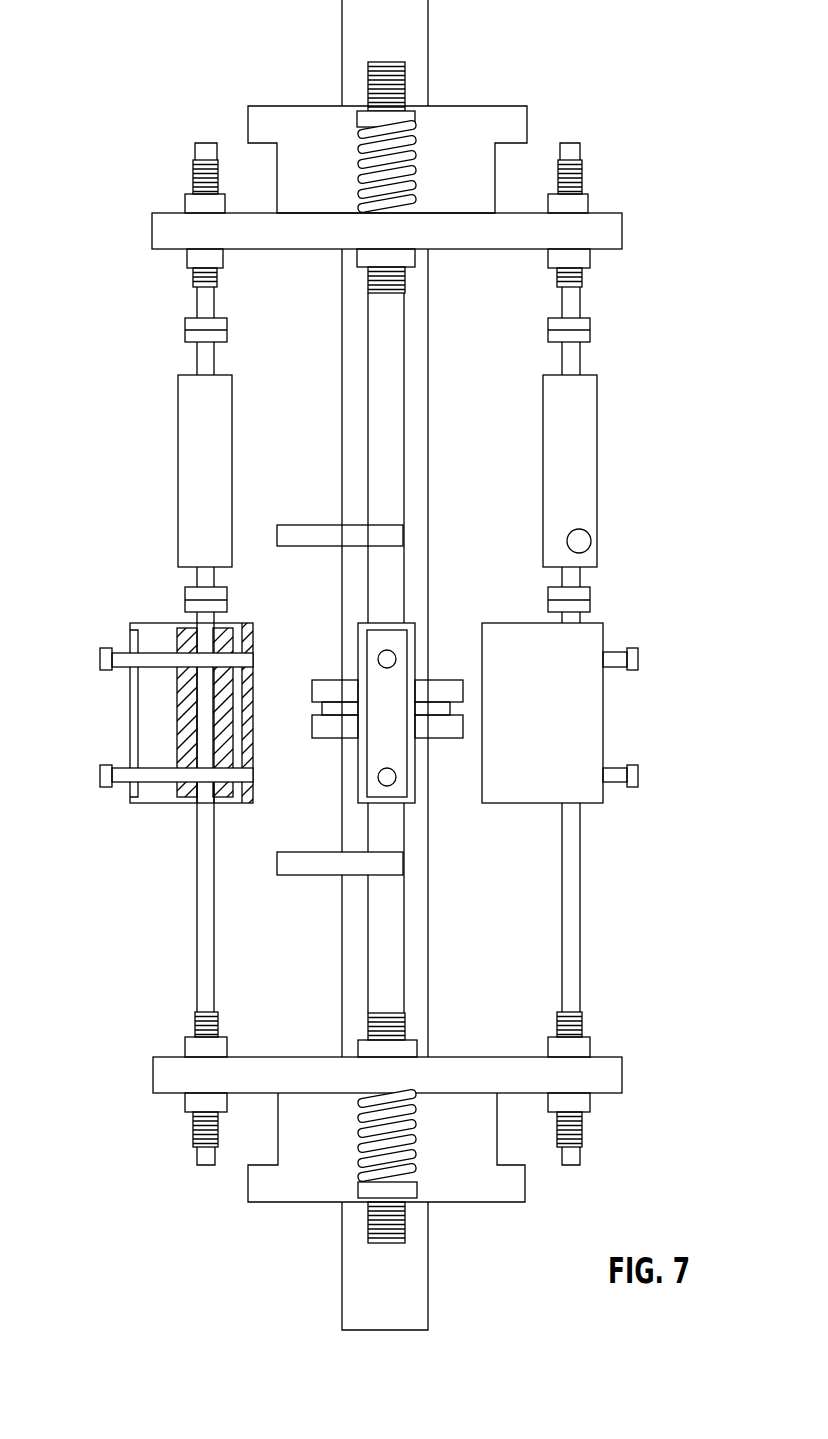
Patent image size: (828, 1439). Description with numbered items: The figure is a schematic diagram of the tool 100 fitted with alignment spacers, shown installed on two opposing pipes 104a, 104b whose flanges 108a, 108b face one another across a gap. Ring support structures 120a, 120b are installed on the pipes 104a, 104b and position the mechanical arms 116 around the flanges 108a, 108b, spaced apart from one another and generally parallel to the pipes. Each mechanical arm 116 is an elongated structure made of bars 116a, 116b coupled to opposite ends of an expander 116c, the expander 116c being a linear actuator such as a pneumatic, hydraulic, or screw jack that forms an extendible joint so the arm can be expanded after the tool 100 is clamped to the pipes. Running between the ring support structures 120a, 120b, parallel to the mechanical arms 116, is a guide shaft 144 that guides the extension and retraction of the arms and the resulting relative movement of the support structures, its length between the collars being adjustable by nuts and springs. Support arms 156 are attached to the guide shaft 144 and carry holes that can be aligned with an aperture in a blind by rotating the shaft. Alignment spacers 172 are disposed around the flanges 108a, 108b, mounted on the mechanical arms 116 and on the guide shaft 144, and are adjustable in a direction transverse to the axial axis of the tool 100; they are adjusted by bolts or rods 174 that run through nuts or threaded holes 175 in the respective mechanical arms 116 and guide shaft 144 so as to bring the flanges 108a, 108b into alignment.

The tool 100 is at (281, 96).
The pipe 104a is at (428, 35).
The pipe 104b is at (428, 1272).
The ring support structure 120a is at (248, 125).
The ring support structure 120b is at (248, 1185).
The guide shaft 144 is at (405, 947).
The mechanical arm 116 is at (590, 360).
The bar 116a is at (197, 303).
The bar 116b is at (197, 983).
The expander 116c is at (178, 453).
The alignment spacer 172 is at (130, 715).
The bolt or rod 174 is at (100, 655).
The flange 108a is at (315, 678).
The flange 108b is at (315, 740).
The support arm 156 is at (275, 862).
The nut or threaded hole 175 is at (206, 783).